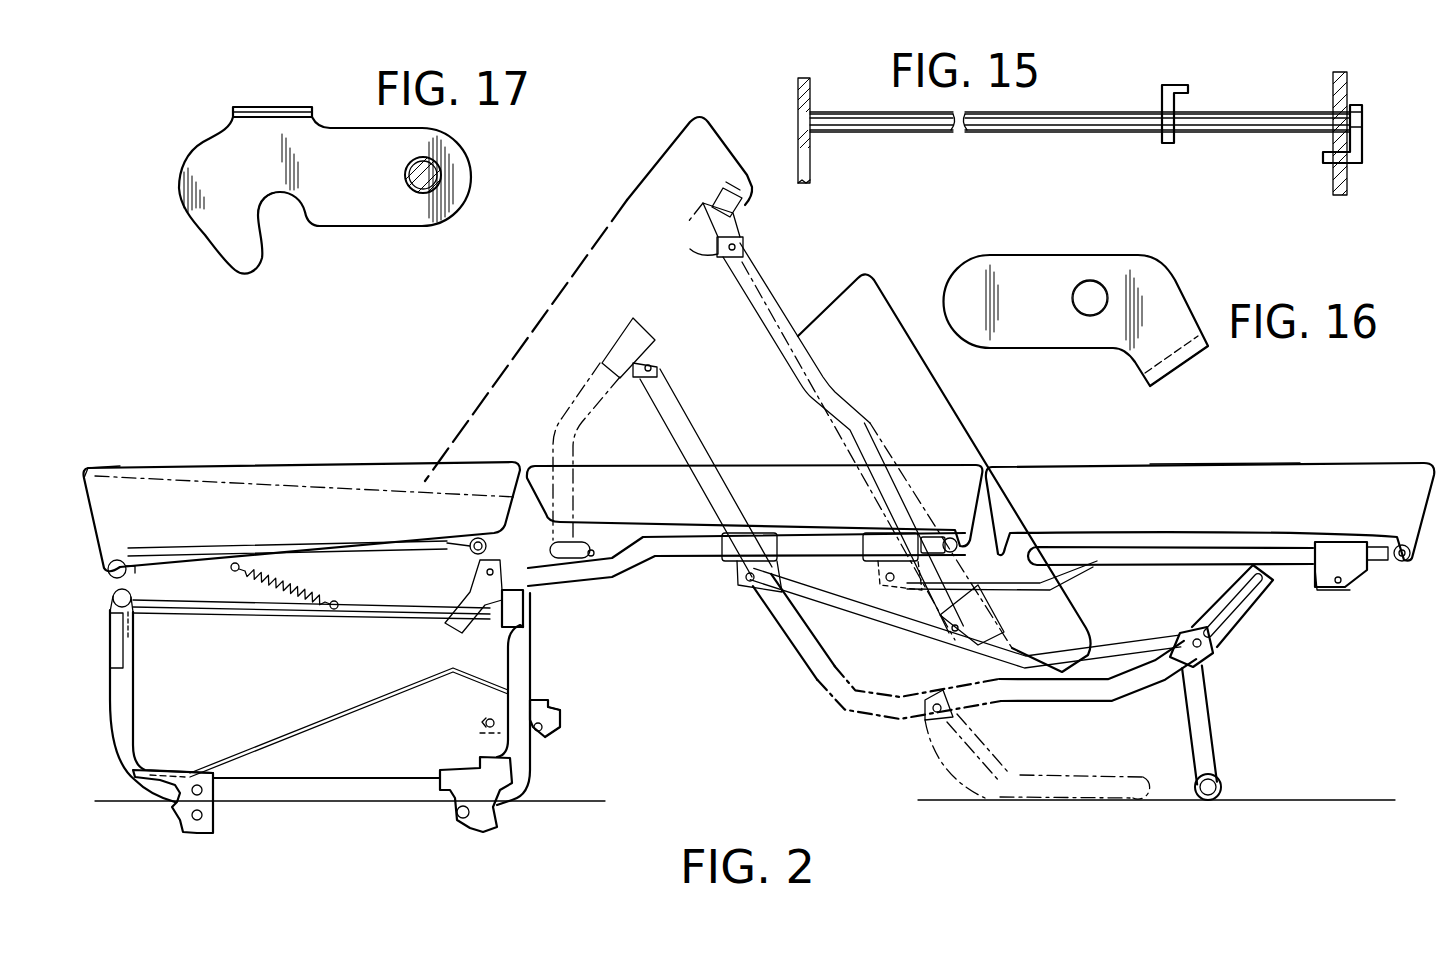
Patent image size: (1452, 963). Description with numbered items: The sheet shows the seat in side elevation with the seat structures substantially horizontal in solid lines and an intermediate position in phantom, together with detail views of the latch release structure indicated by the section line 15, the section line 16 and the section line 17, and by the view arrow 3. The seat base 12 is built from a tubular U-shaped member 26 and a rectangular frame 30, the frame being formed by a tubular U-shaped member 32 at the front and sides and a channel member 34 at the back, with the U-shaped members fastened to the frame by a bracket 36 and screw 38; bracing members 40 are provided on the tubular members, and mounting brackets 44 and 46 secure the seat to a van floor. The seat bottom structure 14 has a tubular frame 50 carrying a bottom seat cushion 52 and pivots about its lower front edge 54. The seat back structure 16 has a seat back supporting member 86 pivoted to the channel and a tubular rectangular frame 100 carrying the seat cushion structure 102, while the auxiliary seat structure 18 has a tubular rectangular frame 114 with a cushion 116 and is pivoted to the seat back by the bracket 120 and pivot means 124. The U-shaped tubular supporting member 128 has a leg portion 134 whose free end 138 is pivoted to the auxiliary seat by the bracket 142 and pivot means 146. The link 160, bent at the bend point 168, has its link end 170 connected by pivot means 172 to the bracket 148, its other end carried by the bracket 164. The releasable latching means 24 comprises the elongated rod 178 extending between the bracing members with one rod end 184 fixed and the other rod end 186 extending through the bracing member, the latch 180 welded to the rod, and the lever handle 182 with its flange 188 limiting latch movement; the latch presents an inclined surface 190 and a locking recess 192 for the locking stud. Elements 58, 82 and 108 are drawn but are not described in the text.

In FIG. 17, the view direction arrow 3 is at (322, 262).
In FIG. 2, the seat base 12 is at (107, 737).
In FIG. 2, the seat bottom structure 14 is at (238, 460).
In FIG. 2, the section line 15 is at (490, 700).
In FIG. 15, the seat back structure 16 is at (1367, 222).
In FIG. 2, the seat back structure 16 is at (790, 465).
In FIG. 15, the section line 17 is at (1208, 175).
In FIG. 2, the auxiliary seat structure 18 is at (1400, 462).
In FIG. 15, the releasable latching means 24 is at (1097, 127).
In FIG. 2, the tubular U-shaped member 26 is at (337, 803).
In FIG. 2, the rectangular frame 30 is at (318, 620).
In FIG. 2, the tubular U-shaped member 32 is at (243, 610).
In FIG. 2, the channel member 34 is at (529, 600).
In FIG. 2, the bracket 36 is at (108, 662).
In FIG. 2, the screw 38 is at (133, 625).
In FIG. 15, the bracing member 40 is at (798, 100).
In FIG. 2, the mounting bracket 44 is at (482, 835).
In FIG. 2, the mounting bracket 46 is at (196, 835).
In FIG. 2, the tubular frame 50 is at (174, 559).
In FIG. 2, the bottom seat cushion 52 is at (94, 470).
In FIG. 2, the lower front edge 54 is at (105, 559).
In FIG. 2, the lower roller 58 is at (105, 606).
In FIG. 2, the tension spring 82 is at (279, 563).
In FIG. 2, the seat back supporting member 86 is at (628, 570).
In FIG. 2, the tubular rectangular frame 100 is at (575, 540).
In FIG. 2, the seat cushion structure 102 is at (662, 463).
In FIG. 2, the pivot roller 108 is at (469, 540).
In FIG. 2, the tubular rectangular frame 114 is at (1408, 560).
In FIG. 2, the cushion 116 is at (1205, 462).
In FIG. 2, the bracket 120 is at (878, 533).
In FIG. 2, the pivot means 124 is at (878, 577).
In FIG. 2, the U-shaped tubular supporting member 128 is at (1217, 767).
In FIG. 2, the leg portion 134 is at (1212, 700).
In FIG. 2, the free end 138 is at (1338, 587).
In FIG. 2, the bracket 142 is at (1323, 540).
In FIG. 2, the pivot means 146 is at (1333, 582).
In FIG. 2, the bracket 148 is at (1240, 630).
In FIG. 2, the link 160 is at (845, 625).
In FIG. 2, the bracket 164 is at (728, 572).
In FIG. 2, the bend point 168 is at (1110, 703).
In FIG. 2, the link end 170 is at (1213, 652).
In FIG. 2, the pivot means 172 is at (1193, 638).
In FIG. 17, the elongated rod 178 is at (440, 165).
In FIG. 15, the elongated rod 178 is at (912, 130).
In FIG. 16, the elongated rod 178 is at (1072, 300).
In FIG. 2, the elongated rod 178 is at (483, 720).
In FIG. 17, the latch 180 is at (290, 107).
In FIG. 15, the latch 180 is at (1162, 90).
In FIG. 2, the latch 180 is at (548, 690).
In FIG. 15, the lever handle 182 is at (1328, 158).
In FIG. 16, the lever handle 182 is at (1200, 278).
In FIG. 17, the rod end 184 is at (435, 178).
In FIG. 15, the rod end 184 is at (797, 128).
In FIG. 2, the rod end 184 is at (473, 732).
In FIG. 15, the rod end 186 is at (1363, 127).
In FIG. 16, the rod end 186 is at (1090, 280).
In FIG. 16, the flange 188 is at (1177, 372).
In FIG. 17, the inclined surface 190 is at (213, 243).
In FIG. 2, the inclined surface 190 is at (561, 725).
In FIG. 17, the locking recess 192 is at (258, 210).
In FIG. 2, the locking recess 192 is at (540, 740).